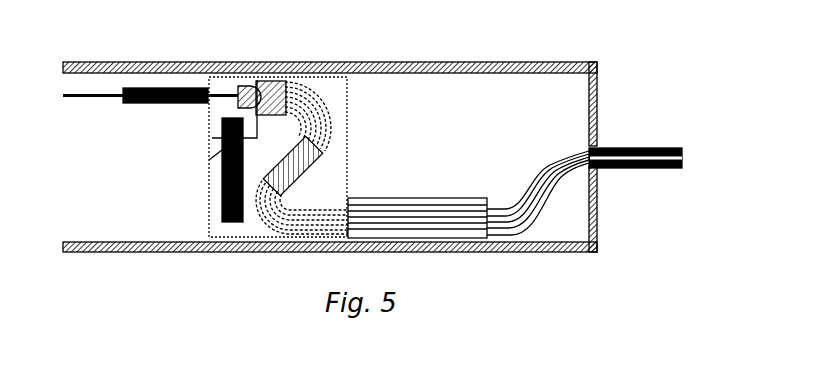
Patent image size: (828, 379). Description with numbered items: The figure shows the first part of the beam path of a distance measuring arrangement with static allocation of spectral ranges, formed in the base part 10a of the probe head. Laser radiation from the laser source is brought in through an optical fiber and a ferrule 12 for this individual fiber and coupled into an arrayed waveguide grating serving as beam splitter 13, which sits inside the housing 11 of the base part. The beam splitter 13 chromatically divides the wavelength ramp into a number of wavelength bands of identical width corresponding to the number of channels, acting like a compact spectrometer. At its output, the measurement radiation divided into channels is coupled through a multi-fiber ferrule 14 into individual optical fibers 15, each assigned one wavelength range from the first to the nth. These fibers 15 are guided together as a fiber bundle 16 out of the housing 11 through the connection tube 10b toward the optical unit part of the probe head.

The optical device / housing input side 10a is at (205, 275).
The connection tube 10b is at (644, 180).
The housing 11 is at (330, 144).
The ferrule 12 is at (150, 113).
The beam splitter 13 is at (312, 157).
The multi-fiber ferrule 14 is at (417, 193).
The optical fibers 15 is at (528, 195).
The fiber bundle 16 is at (601, 139).